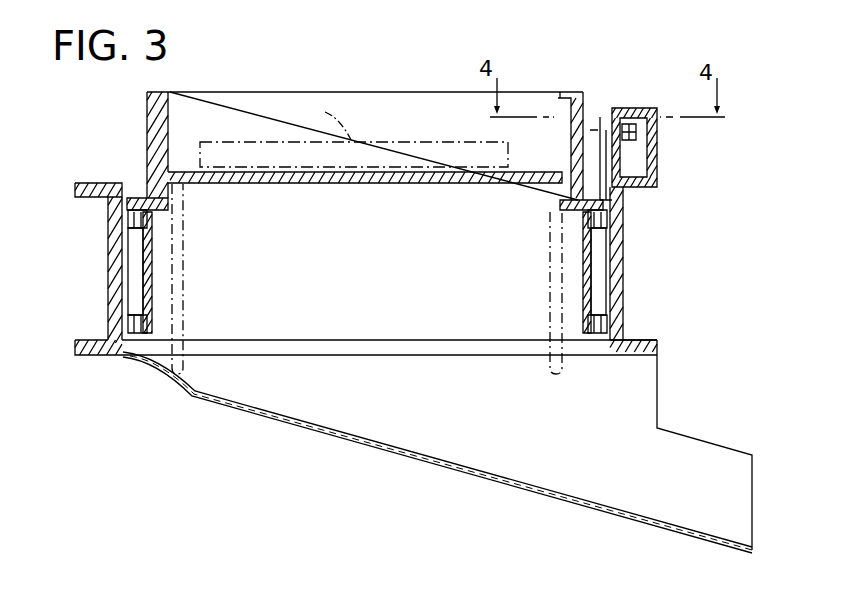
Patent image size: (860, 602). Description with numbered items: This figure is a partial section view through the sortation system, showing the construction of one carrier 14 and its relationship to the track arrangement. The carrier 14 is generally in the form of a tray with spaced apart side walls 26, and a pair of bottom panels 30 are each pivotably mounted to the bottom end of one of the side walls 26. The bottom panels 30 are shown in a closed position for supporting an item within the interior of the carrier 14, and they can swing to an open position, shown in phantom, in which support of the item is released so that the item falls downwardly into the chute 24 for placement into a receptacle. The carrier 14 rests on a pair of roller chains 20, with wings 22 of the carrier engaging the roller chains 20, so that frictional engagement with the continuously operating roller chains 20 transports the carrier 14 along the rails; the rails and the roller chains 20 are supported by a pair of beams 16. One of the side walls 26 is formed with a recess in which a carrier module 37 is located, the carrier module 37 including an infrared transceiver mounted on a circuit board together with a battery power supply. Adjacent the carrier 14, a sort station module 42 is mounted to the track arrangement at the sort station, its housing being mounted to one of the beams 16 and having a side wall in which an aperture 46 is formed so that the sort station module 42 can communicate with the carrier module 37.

The carrier 14 is at (401, 76).
The side wall 26 is at (578, 90).
The bottom panel 30 is at (400, 184).
The wing 22 is at (136, 198).
The roller chain 20 is at (135, 340).
The beam 16 is at (624, 290).
The sort station module 42 is at (646, 78).
The carrier module 37 is at (590, 110).
The aperture 46 is at (606, 128).
The chute 24 is at (376, 458).